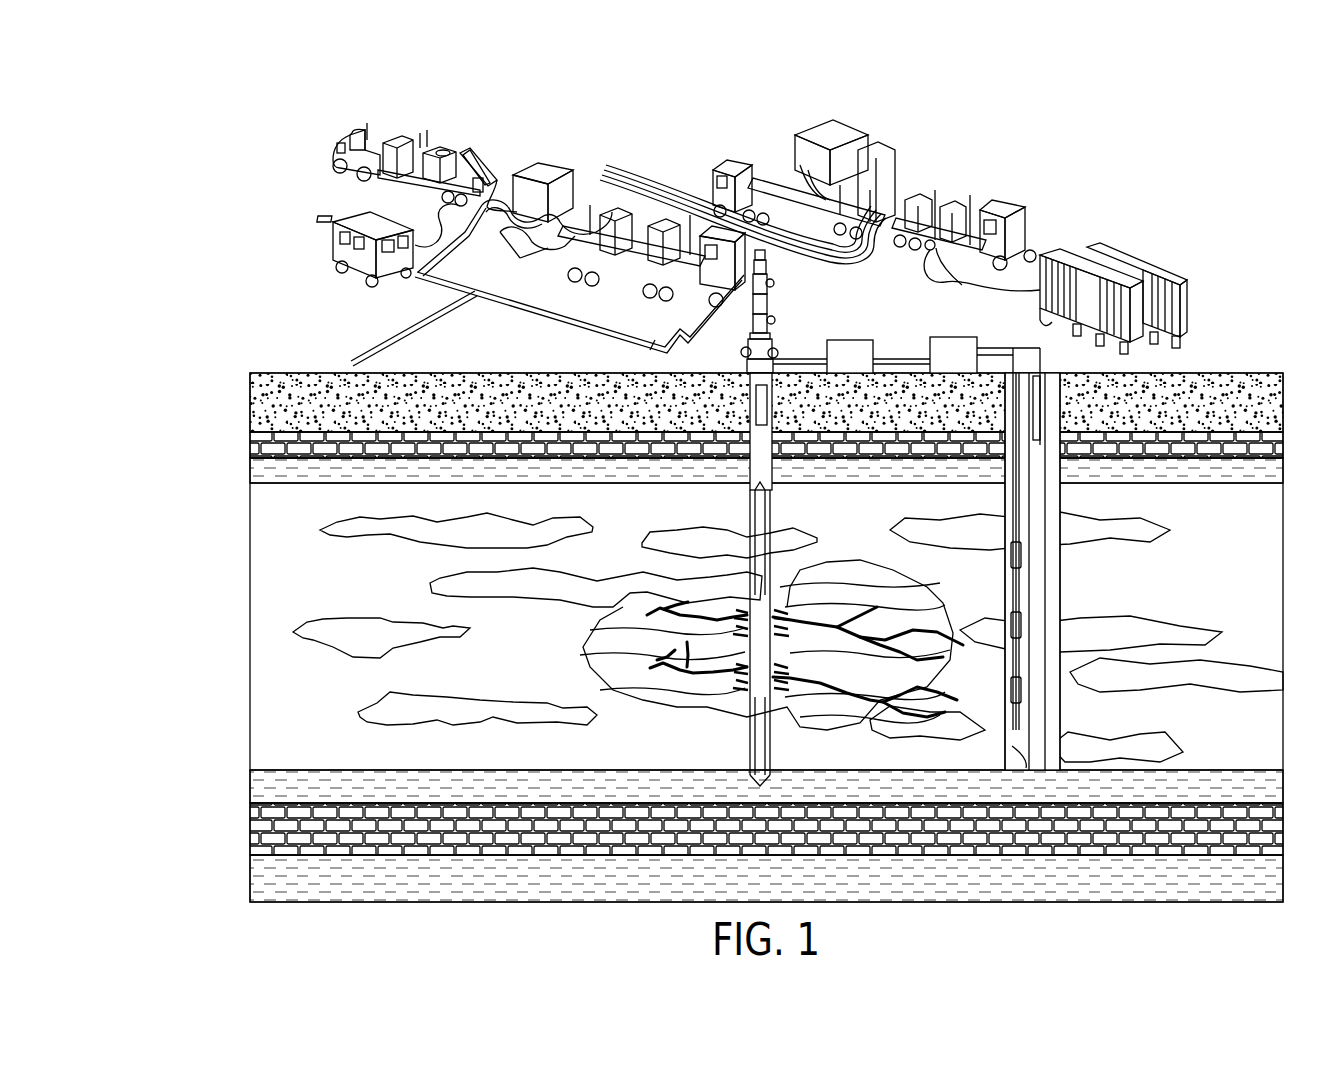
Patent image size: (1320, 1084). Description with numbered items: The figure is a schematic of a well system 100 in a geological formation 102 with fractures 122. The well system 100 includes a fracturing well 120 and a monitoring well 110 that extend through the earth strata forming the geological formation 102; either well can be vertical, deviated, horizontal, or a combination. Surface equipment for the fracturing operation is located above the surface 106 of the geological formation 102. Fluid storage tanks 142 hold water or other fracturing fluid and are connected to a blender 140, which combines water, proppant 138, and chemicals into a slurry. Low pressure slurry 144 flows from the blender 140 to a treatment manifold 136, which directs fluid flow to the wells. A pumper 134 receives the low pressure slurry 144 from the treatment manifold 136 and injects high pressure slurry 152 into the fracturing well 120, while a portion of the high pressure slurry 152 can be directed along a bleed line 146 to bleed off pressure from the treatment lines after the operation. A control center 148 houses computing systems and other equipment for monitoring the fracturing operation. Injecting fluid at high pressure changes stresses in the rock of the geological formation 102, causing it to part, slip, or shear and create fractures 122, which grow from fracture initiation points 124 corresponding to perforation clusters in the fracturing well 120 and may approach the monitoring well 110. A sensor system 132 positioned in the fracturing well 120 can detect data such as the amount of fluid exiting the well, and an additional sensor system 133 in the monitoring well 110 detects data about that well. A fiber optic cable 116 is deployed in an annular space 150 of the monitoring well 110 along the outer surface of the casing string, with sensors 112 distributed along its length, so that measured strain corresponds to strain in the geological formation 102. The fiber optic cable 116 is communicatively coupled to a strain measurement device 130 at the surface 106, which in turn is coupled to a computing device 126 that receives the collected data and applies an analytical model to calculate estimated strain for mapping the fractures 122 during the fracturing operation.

The well system 100 is at (176, 118).
The geological formation 102 is at (270, 519).
The surface 106 is at (1268, 376).
The monitoring well 110 is at (1063, 672).
The sensors 112 is at (1006, 561).
The fiber optic cable 116 is at (1018, 497).
The fracturing well 120 is at (748, 526).
The fractures 122 is at (876, 602).
The fracture initiation points 124 is at (806, 548).
The computing device 126 is at (860, 338).
The strain measurement device 130 is at (951, 338).
The sensor system 132 is at (773, 398).
The additional sensor system 133 is at (1046, 421).
The pumper 134 is at (397, 131).
The treatment manifold 136 is at (572, 160).
The proppant 138 is at (786, 169).
The blender 140 is at (1008, 201).
The fluid storage tanks 142 is at (1166, 302).
The low pressure slurry 144 is at (788, 262).
The bleed line 146 is at (362, 359).
The control center 148 is at (331, 226).
The annular space 150 is at (1012, 752).
The high pressure slurry 152 is at (519, 307).